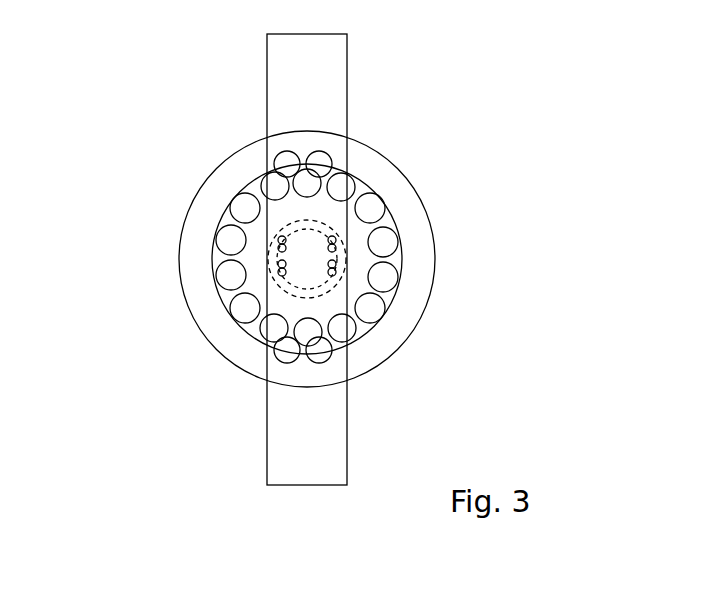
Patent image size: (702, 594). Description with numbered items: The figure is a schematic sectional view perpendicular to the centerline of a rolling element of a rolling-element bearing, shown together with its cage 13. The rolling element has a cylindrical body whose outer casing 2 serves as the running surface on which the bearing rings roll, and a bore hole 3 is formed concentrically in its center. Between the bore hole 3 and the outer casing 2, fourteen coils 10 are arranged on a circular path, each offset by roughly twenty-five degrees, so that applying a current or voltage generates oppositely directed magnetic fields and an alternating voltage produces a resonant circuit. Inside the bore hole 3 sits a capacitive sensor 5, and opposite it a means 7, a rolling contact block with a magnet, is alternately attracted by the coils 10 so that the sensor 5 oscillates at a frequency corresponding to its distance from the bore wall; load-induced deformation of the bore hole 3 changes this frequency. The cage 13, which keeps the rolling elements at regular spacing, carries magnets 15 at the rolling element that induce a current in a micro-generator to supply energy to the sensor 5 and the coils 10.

The outer casing 2 is at (412, 184).
The bore hole 3 is at (259, 259).
The capacitive sensor 5 is at (311, 242).
The means for producing a defined distance from the bore wall 7 is at (309, 278).
The coils 10 is at (227, 240).
The cage 13 is at (328, 75).
The magnets 15 is at (333, 352).